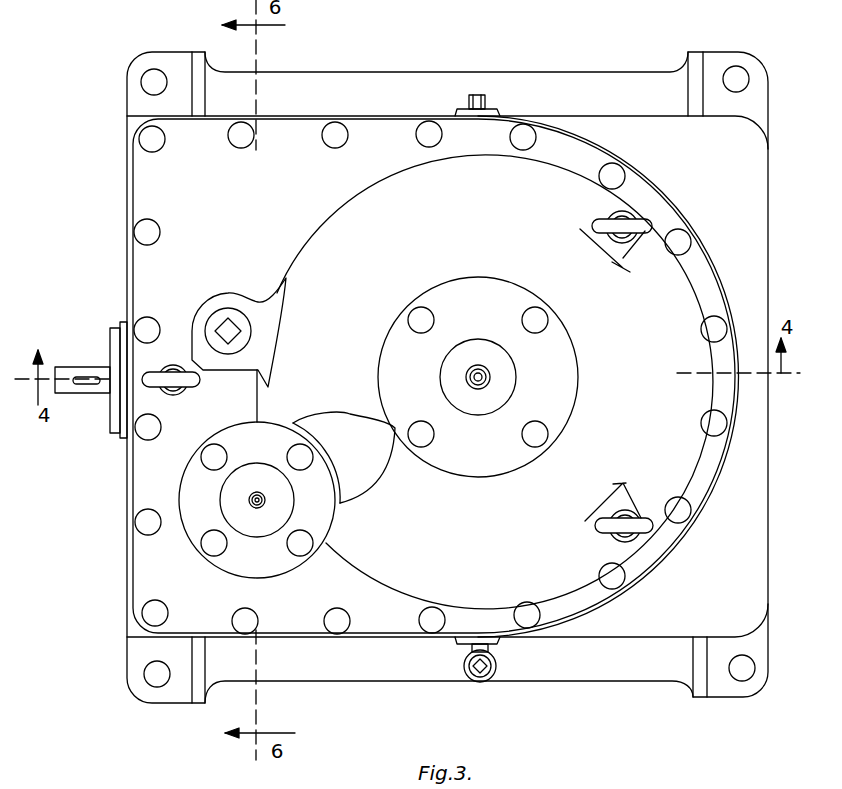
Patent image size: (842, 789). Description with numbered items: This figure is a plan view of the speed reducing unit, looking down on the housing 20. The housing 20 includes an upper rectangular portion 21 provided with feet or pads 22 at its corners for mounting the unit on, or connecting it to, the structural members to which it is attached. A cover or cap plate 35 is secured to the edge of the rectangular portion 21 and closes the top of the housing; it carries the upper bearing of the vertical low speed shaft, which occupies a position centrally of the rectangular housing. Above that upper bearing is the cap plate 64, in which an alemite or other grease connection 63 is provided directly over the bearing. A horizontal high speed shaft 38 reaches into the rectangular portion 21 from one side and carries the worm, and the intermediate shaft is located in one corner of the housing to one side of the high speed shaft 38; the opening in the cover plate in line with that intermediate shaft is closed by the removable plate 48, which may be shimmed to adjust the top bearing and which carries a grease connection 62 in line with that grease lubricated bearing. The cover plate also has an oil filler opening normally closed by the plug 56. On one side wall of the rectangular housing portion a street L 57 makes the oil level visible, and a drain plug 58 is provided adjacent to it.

The housing 20 is at (557, 70).
The upper rectangular portion 21 is at (625, 623).
The feet or pads 22 is at (170, 72).
The cover or cap plate 35 is at (495, 382).
The high speed shaft 38 is at (82, 366).
The removable plate 48 is at (207, 490).
The plug 56 is at (221, 318).
The street L 57 is at (479, 683).
The drain plug 58 is at (457, 650).
The grease connection 62 is at (245, 504).
The grease connection 63 is at (488, 368).
The cap plate 64 is at (547, 392).